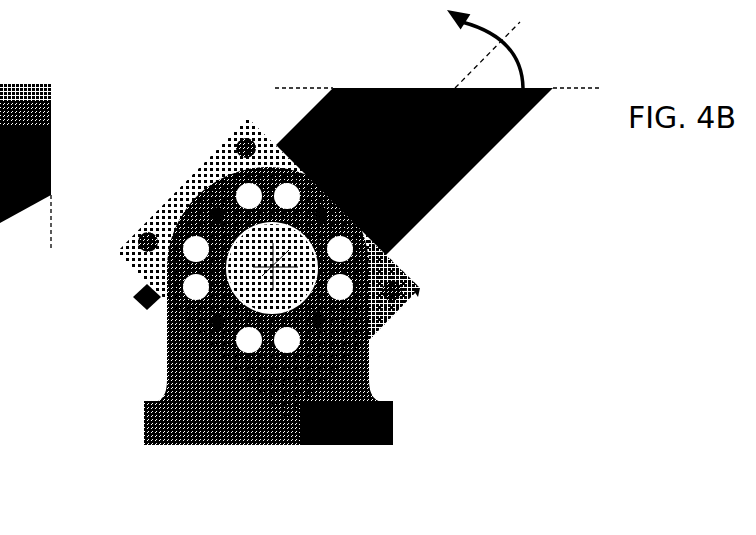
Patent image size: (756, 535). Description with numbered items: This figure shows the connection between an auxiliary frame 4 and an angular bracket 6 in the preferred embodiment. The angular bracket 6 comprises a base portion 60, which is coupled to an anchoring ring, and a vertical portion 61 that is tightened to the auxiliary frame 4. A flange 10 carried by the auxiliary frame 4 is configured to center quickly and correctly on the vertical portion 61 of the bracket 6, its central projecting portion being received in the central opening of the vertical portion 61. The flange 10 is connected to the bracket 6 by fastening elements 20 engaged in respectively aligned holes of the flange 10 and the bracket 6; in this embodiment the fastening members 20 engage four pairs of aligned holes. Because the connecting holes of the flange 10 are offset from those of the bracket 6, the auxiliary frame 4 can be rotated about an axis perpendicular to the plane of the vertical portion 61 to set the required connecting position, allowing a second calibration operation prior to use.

The auxiliary frame 4 is at (466, 180).
The angular bracket 6 is at (200, 318).
The flange 10 is at (196, 168).
The fastening elements 20 is at (215, 218).
The base portion 60 is at (259, 429).
The vertical portion 61 is at (188, 373).